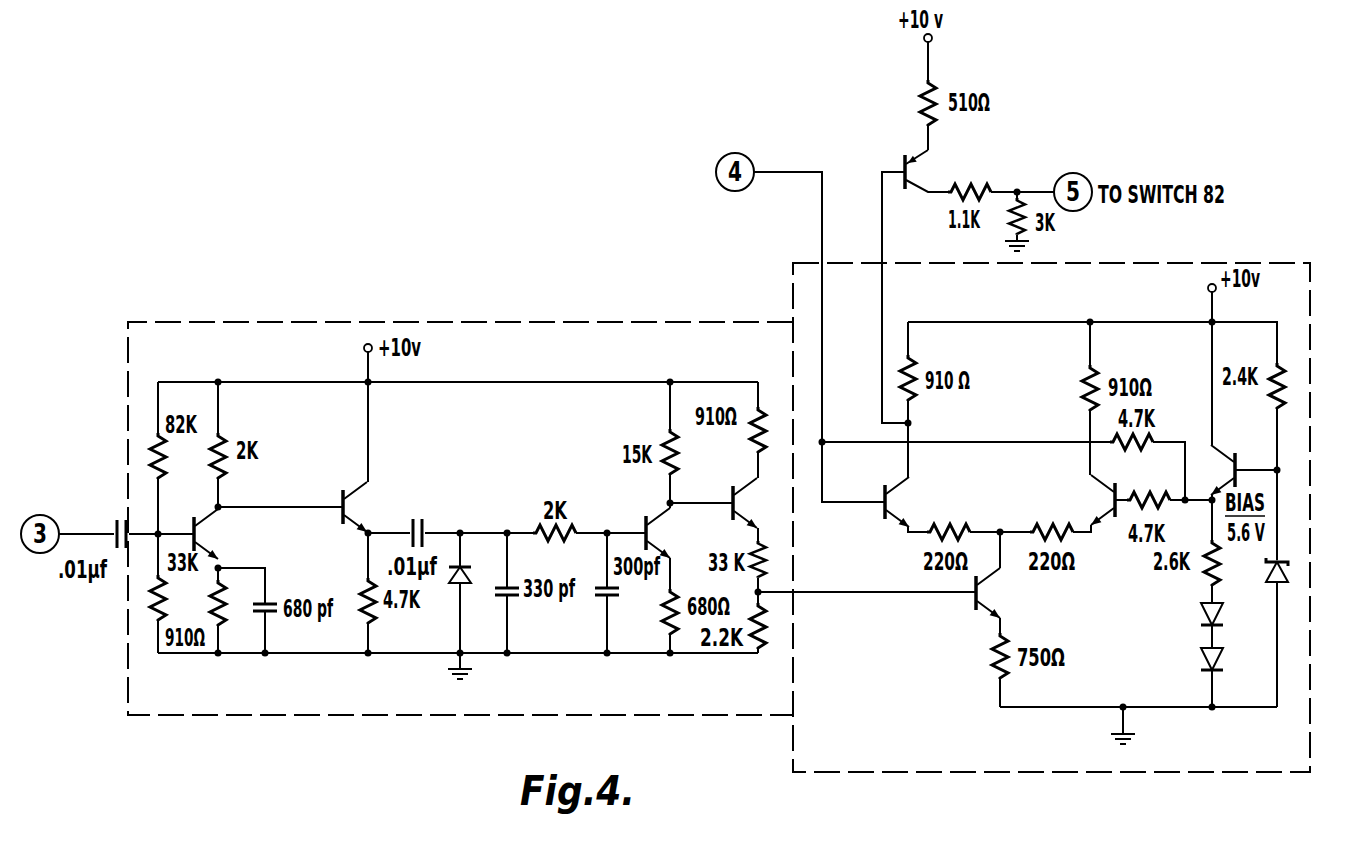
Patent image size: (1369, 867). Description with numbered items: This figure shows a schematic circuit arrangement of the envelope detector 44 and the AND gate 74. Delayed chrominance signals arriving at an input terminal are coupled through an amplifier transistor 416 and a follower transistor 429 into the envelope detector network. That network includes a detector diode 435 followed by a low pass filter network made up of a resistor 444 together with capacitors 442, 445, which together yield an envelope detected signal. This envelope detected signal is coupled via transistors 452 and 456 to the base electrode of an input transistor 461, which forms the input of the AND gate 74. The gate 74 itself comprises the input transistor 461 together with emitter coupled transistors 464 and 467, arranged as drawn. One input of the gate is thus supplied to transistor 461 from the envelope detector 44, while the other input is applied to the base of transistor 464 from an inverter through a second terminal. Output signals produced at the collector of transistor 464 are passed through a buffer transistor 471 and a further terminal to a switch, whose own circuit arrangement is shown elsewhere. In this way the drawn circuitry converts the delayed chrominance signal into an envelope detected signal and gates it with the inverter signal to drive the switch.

The envelope detector 44 is at (529, 320).
The gate 74 is at (1312, 696).
The amplifier transistor 416 is at (235, 548).
The follower transistor 429 is at (387, 521).
The detector diode 435 is at (458, 594).
The capacitor 442 is at (511, 597).
The resistor 444 is at (554, 551).
The capacitor 445 is at (604, 597).
The transistor 452 is at (698, 539).
The transistor 456 is at (779, 512).
The input transistor 461 is at (1018, 604).
The transistor 464 is at (930, 511).
The transistor 467 is at (1098, 511).
The buffer transistor 471 is at (952, 180).